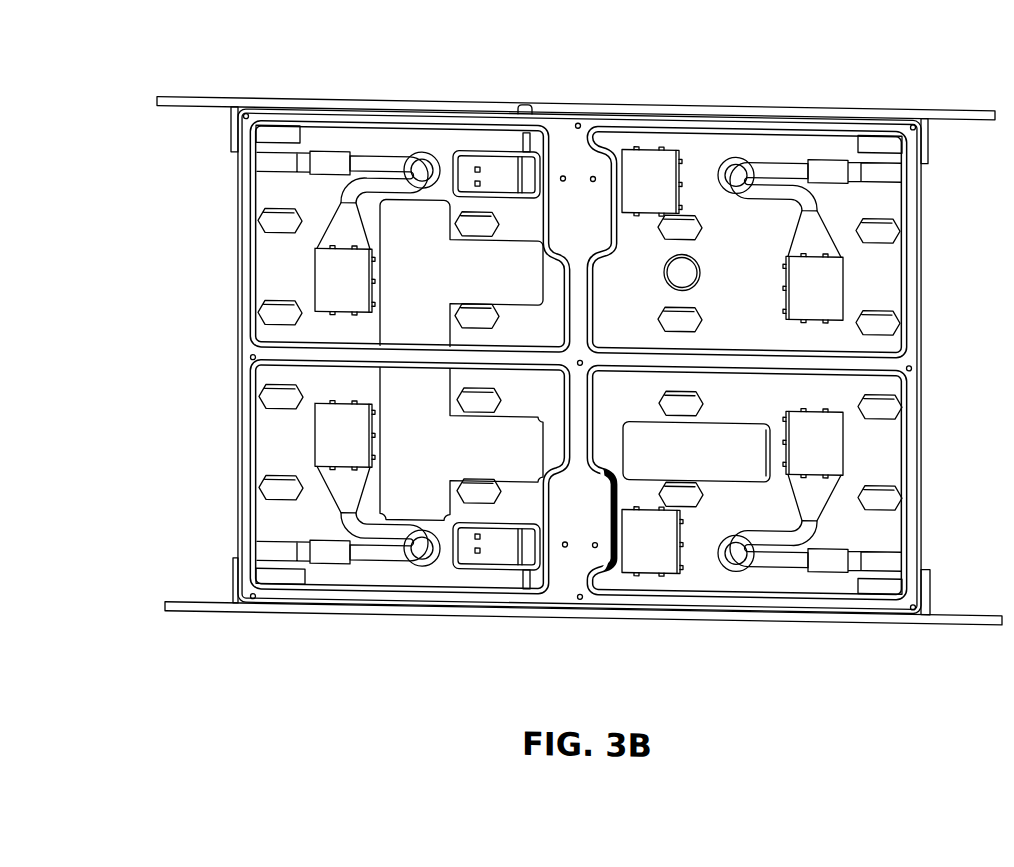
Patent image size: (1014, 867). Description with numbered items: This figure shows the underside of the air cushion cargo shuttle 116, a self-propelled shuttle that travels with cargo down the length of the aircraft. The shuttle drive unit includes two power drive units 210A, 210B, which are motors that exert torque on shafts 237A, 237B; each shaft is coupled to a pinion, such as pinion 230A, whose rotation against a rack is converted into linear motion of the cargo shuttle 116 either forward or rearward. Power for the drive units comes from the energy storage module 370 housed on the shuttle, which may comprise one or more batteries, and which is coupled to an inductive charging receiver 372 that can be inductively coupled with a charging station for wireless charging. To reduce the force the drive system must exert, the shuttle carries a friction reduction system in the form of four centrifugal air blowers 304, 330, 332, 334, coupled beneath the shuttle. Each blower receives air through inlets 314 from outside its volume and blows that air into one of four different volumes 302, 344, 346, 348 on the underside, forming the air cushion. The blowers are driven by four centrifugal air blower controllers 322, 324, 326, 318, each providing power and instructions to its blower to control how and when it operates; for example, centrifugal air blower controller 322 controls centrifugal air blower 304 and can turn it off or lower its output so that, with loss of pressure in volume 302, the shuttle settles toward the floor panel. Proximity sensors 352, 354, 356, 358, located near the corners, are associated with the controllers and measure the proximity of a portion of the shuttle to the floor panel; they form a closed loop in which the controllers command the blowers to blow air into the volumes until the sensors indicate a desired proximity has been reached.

The air cushion cargo shuttle 116 is at (885, 454).
The power drive unit 210A is at (488, 164).
The power drive unit 210B is at (494, 556).
The pinion 230A is at (522, 95).
The shaft 237A is at (531, 142).
The shaft 237B is at (532, 579).
The volume 302 is at (693, 548).
The centrifugal air blower 304 is at (745, 559).
The inlets 314 is at (240, 175).
The centrifugal air blower controller 318 is at (828, 277).
The centrifugal air blower controller 322 is at (832, 417).
The centrifugal air blower controller 324 is at (342, 273).
The centrifugal air blower controller 326 is at (345, 435).
The centrifugal air blower 330 is at (417, 147).
The centrifugal air blower 332 is at (425, 565).
The centrifugal air blower 334 is at (738, 134).
The volume 344 is at (310, 191).
The volume 346 is at (315, 506).
The volume 348 is at (733, 235).
The proximity sensor 352 is at (882, 576).
The proximity sensor 354 is at (275, 129).
The proximity sensor 356 is at (283, 582).
The proximity sensor 358 is at (862, 134).
The energy storage module 370 is at (405, 320).
The inductive charging receiver 372 is at (727, 430).